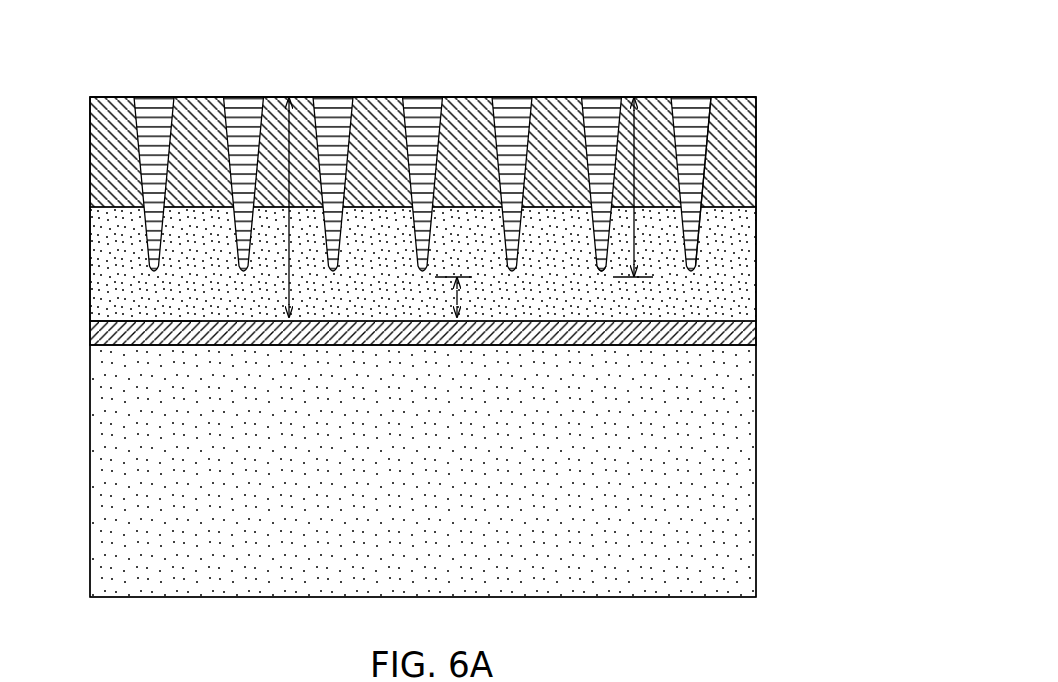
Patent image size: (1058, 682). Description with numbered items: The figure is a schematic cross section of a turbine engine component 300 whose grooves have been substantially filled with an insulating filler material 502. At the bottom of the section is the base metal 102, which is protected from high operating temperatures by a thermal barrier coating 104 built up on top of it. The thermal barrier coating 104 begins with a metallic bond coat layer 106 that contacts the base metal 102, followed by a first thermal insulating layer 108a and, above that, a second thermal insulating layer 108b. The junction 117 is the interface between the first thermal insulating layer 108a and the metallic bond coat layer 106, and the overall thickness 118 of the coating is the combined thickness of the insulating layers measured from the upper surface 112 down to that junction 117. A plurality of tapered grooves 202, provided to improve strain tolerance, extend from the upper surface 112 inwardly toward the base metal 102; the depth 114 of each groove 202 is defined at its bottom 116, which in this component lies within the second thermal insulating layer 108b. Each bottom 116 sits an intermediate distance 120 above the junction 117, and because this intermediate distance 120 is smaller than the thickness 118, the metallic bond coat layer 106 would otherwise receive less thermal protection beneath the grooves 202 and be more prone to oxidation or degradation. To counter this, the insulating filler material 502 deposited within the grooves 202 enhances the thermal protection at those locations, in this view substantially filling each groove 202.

The turbine engine component 300 is at (724, 33).
The base metal 102 is at (757, 458).
The thermal barrier coating 104 is at (79, 94).
The metallic bond coat layer 106 is at (757, 338).
The first thermal insulating layer 108a is at (757, 262).
The second thermal insulating layer 108b is at (757, 158).
The upper surface 112 is at (122, 96).
The depth 114 is at (630, 122).
The bottom 116 is at (600, 273).
The junction 117 is at (133, 320).
The thickness 118 is at (283, 221).
The intermediate distance 120 is at (455, 298).
The groove 202 is at (712, 123).
The insulating filler material 502 is at (697, 96).